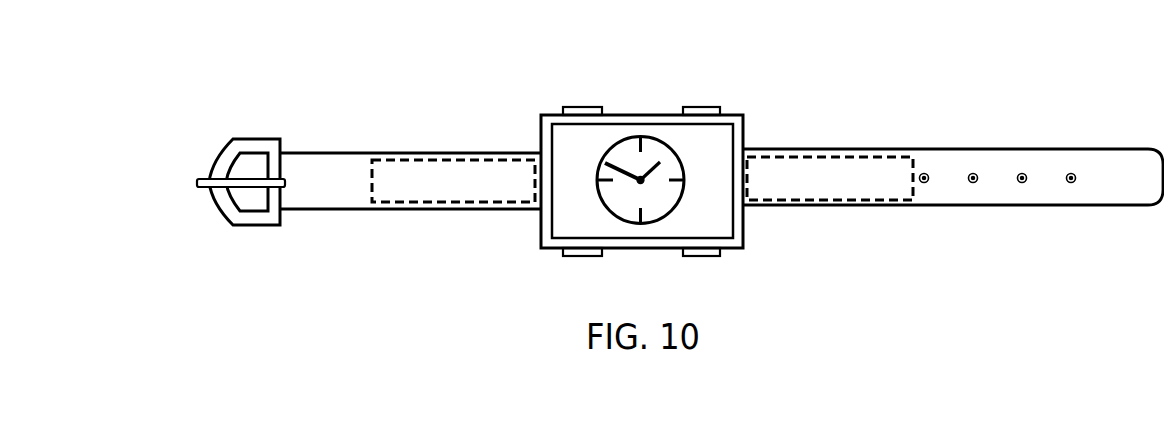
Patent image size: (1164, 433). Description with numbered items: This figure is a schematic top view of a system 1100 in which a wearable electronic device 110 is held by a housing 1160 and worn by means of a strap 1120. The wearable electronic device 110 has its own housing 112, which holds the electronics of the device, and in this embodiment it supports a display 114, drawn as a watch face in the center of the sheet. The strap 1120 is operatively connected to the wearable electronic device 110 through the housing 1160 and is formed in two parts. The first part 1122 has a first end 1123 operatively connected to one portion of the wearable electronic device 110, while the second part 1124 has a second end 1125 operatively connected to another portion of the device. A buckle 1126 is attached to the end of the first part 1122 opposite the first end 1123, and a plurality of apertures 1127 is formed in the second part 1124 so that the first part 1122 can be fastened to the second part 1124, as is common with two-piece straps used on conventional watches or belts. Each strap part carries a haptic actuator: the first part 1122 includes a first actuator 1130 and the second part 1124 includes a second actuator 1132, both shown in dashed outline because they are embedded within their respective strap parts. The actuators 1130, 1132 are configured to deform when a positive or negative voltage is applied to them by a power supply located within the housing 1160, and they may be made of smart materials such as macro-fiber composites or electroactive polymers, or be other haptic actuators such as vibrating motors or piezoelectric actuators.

The system 1100 is at (251, 70).
The wearable electronic device 110 is at (751, 101).
The housing 112 is at (623, 124).
The display 114 is at (665, 136).
The housing 1160 is at (550, 114).
The strap 1120 is at (1039, 99).
The first part 1122 is at (407, 153).
The first end 1123 is at (537, 146).
The second part 1124 is at (906, 150).
The second end 1125 is at (749, 139).
The buckle 1126 is at (223, 152).
The apertures 1127 is at (925, 184).
The first actuator 1130 is at (450, 205).
The second actuator 1132 is at (807, 202).